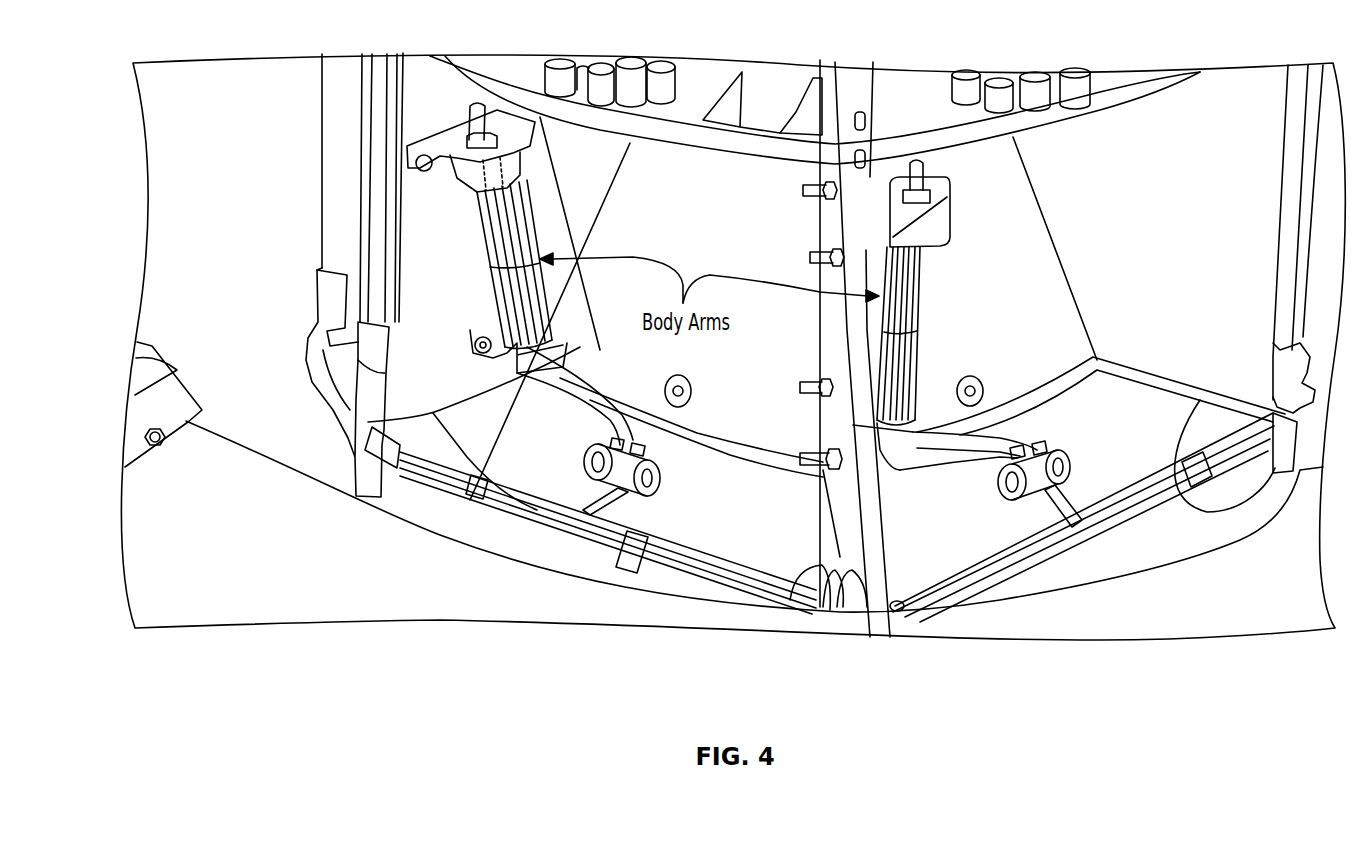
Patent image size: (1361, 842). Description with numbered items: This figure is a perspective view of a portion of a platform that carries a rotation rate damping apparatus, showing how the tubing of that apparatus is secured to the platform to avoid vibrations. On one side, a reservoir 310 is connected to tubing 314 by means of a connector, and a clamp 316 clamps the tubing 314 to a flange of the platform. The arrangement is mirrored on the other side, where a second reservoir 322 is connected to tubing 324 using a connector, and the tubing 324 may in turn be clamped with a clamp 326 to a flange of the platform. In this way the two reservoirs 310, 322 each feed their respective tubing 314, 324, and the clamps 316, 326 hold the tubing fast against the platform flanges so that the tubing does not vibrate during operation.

The reservoir 310 is at (515, 362).
The tubing 314 is at (537, 510).
The clamp 316 is at (623, 490).
The reservoir 322 is at (920, 420).
The tubing 324 is at (988, 598).
The clamp 326 is at (1055, 527).